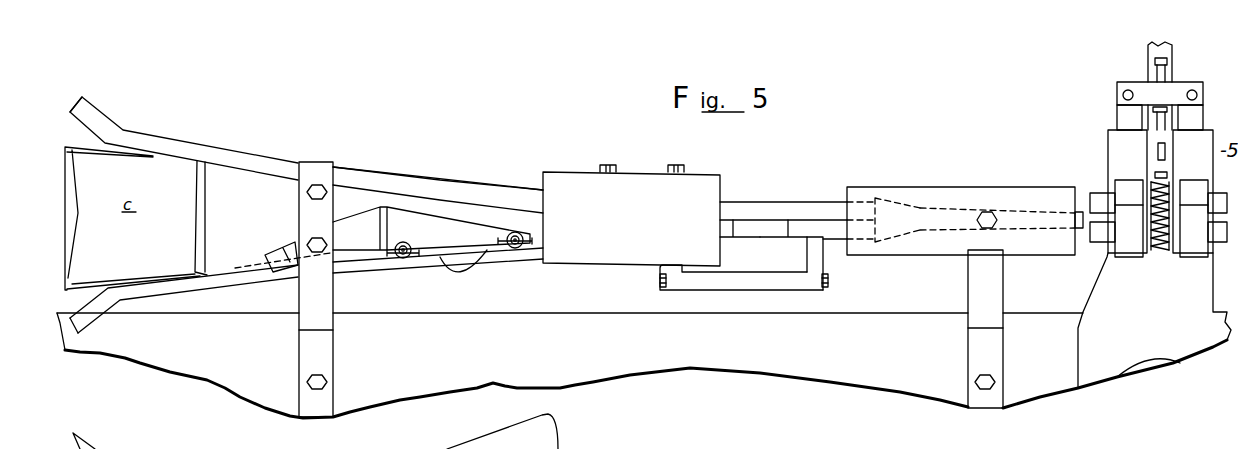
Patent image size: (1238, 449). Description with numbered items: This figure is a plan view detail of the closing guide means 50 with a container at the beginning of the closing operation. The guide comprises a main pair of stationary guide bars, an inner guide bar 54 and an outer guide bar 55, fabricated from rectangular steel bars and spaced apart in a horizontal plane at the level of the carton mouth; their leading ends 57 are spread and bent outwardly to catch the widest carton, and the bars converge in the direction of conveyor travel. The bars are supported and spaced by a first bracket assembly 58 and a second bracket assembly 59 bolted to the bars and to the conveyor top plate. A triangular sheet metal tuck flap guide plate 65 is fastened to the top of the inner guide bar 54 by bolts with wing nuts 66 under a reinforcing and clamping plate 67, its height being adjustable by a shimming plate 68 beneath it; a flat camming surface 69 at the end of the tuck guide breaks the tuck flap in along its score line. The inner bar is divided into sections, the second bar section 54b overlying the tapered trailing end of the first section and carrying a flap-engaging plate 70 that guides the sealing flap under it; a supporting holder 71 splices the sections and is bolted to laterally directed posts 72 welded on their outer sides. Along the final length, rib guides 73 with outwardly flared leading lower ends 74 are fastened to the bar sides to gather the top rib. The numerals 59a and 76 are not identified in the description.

The closing guide means 50 is at (432, 163).
The inner guide bar 54 is at (355, 263).
The second bar section 54b is at (795, 233).
The outer guide bar 55 is at (360, 177).
The leading ends 57 is at (85, 115).
The first bracket assembly 58 is at (298, 327).
The second bracket assembly 59 is at (998, 320).
The post extension bracket 59a is at (727, 232).
The tuck flap guide plate 65 is at (358, 223).
The wing nuts 66 is at (403, 260).
The reinforcing and clamping plate 67 is at (472, 241).
The shimming plate 68 is at (463, 275).
The flat camming surface 69 is at (276, 254).
The flap-engaging plate 70 is at (750, 228).
The supporting holder 71 is at (748, 290).
The laterally directed posts 72 is at (665, 267).
The rib guides 73 is at (957, 208).
The leading lower ends 74 is at (877, 198).
The control box 76 is at (637, 172).